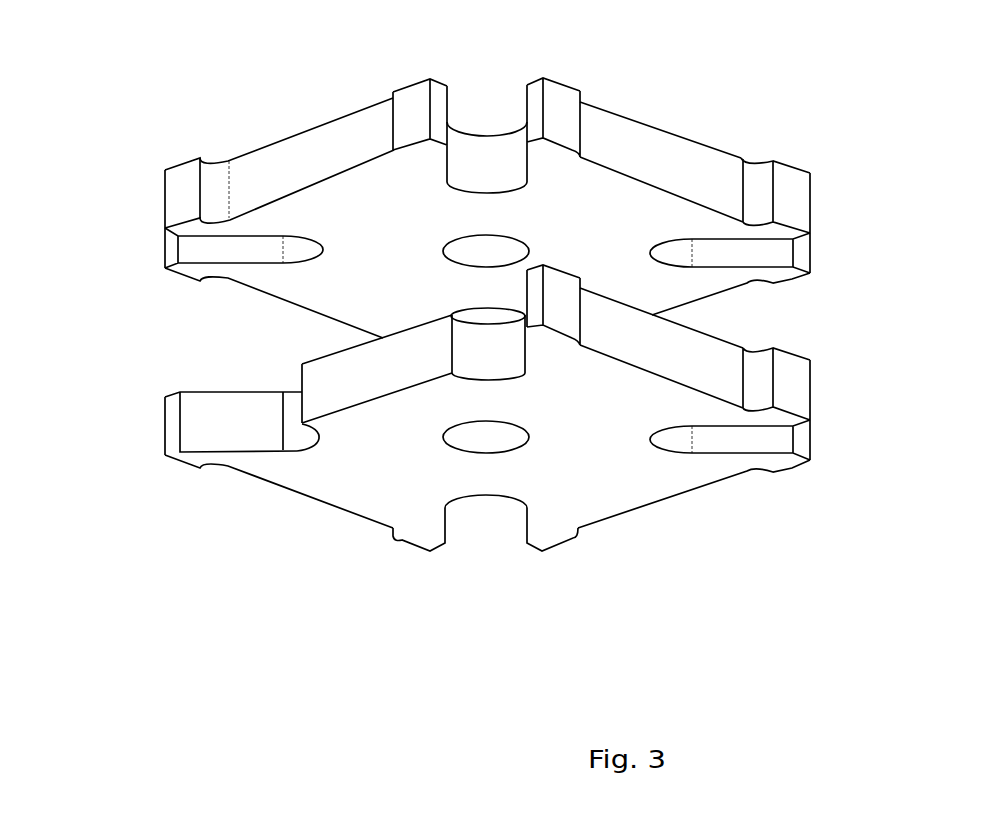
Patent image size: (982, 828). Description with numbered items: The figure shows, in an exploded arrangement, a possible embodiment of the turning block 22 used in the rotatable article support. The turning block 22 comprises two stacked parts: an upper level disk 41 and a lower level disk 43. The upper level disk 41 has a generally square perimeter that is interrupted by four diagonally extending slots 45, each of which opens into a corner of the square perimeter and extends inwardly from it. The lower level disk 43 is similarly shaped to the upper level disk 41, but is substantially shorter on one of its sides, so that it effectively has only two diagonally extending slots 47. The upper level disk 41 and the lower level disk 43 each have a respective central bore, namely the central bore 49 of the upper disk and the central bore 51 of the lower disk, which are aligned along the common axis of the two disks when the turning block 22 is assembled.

The turning block 22 is at (115, 77).
The upper level disk 41 is at (677, 116).
The lower level disk 43 is at (679, 519).
The diagonally extending slots 45 is at (487, 94).
The diagonally extending slots 47 is at (487, 545).
The central bore 49 is at (485, 249).
The central bore 51 is at (485, 439).